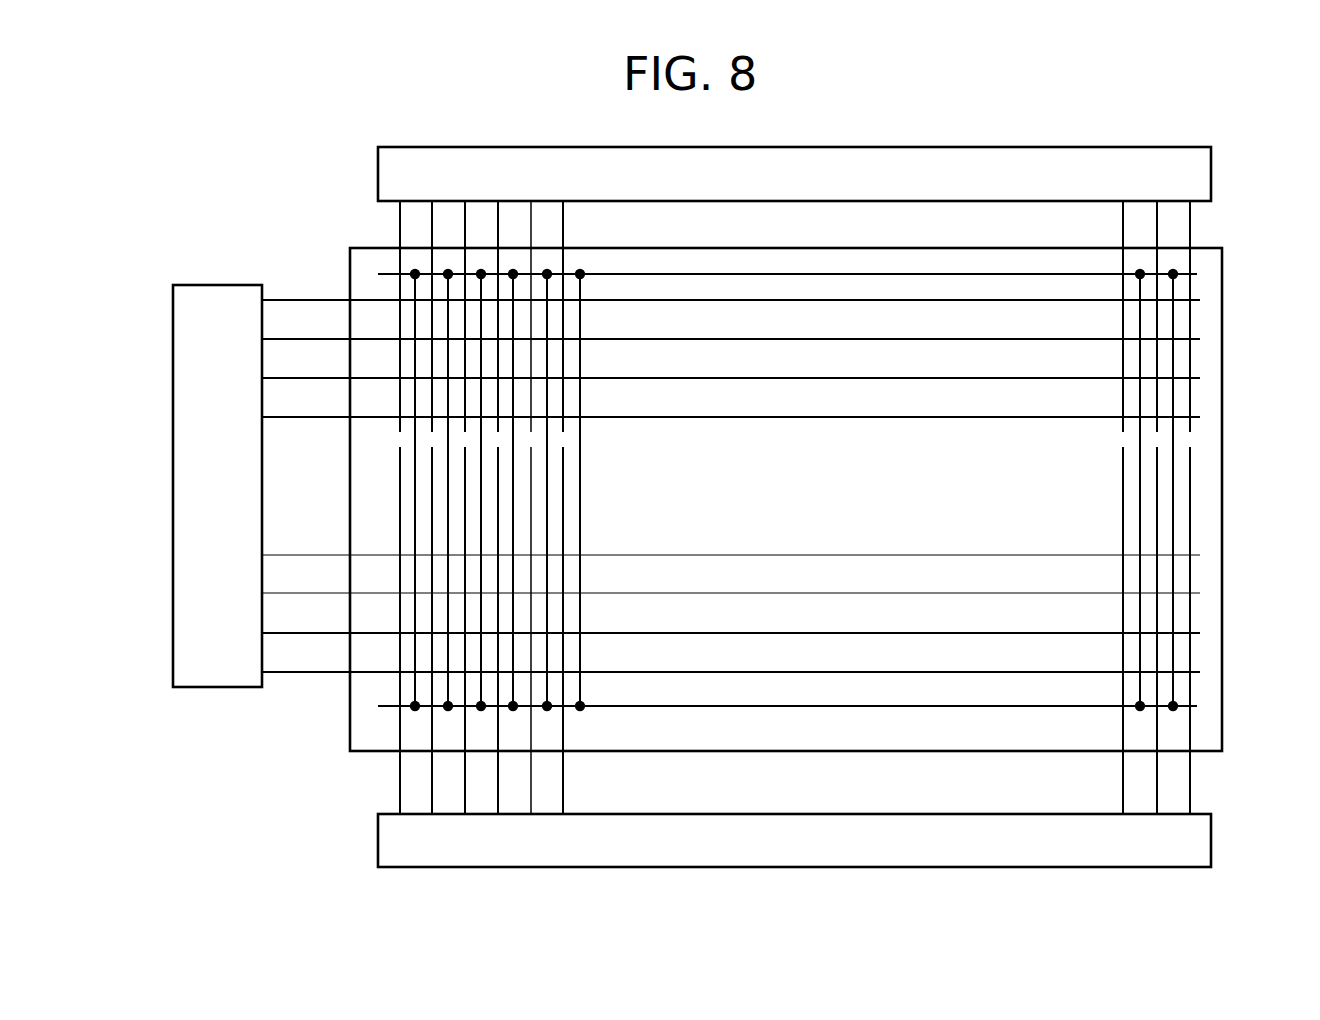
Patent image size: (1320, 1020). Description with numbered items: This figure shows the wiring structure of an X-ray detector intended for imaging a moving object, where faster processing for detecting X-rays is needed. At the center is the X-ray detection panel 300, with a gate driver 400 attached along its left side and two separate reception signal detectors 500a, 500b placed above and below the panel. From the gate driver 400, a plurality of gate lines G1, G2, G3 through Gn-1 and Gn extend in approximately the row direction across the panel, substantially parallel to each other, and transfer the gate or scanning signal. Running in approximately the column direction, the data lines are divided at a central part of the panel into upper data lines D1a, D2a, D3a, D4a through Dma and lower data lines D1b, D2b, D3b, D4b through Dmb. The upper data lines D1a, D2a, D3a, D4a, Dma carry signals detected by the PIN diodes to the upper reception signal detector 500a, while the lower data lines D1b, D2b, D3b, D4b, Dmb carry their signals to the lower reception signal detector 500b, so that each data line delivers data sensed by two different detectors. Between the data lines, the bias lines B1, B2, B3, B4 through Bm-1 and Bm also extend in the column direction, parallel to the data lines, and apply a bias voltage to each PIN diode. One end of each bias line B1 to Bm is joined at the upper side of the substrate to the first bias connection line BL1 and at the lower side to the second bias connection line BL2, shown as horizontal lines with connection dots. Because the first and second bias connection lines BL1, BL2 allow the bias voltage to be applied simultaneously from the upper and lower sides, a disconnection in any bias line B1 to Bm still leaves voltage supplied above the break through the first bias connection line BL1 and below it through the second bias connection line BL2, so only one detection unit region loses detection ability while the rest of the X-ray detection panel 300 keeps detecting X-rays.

The reception signal detector 500a is at (1211, 178).
The reception signal detector 500b is at (1211, 840).
The gate driver 400 is at (173, 482).
The X-ray detection panel 300 is at (1222, 360).
The first bias connection line BL1 is at (1197, 274).
The second bias connection line BL2 is at (1197, 706).
The gate line G1 is at (731, 286).
The gate line G2 is at (731, 325).
The gate line G3 is at (731, 364).
The gate line Gn-1 is at (731, 619).
The gate line Gn is at (731, 658).
The upper data line D1a is at (419, 316).
The upper data line D2a is at (452, 316).
The upper data line D3a is at (485, 316).
The upper data line D4a is at (518, 316).
The upper data line Dma is at (1181, 316).
The lower data line D1b is at (389, 630).
The lower data line D2b is at (423, 630).
The lower data line D3b is at (456, 630).
The lower data line D4b is at (489, 630).
The lower data line Dmb is at (1181, 630).
The bias line B1 is at (418, 508).
The bias line B2 is at (451, 508).
The bias line B3 is at (484, 508).
The bias line B4 is at (517, 508).
The bias line Bm-1 is at (1138, 508).
The bias line Bm is at (1176, 508).